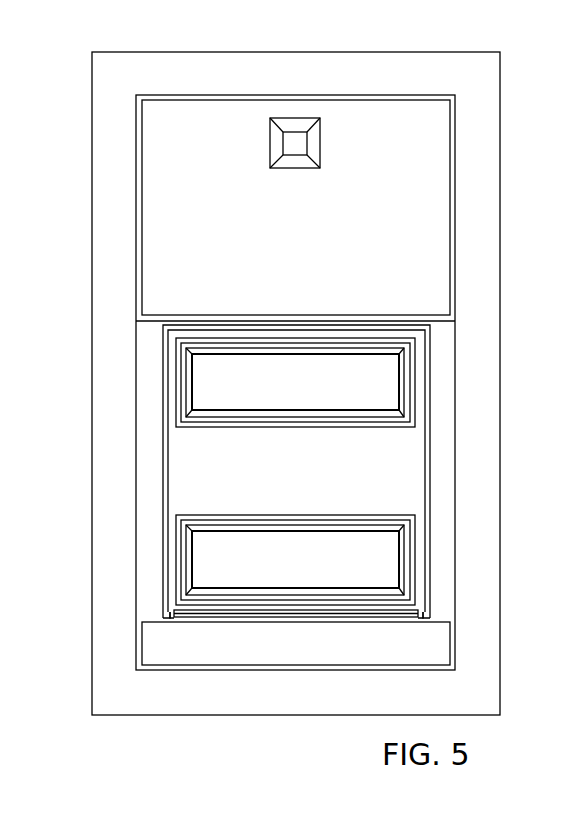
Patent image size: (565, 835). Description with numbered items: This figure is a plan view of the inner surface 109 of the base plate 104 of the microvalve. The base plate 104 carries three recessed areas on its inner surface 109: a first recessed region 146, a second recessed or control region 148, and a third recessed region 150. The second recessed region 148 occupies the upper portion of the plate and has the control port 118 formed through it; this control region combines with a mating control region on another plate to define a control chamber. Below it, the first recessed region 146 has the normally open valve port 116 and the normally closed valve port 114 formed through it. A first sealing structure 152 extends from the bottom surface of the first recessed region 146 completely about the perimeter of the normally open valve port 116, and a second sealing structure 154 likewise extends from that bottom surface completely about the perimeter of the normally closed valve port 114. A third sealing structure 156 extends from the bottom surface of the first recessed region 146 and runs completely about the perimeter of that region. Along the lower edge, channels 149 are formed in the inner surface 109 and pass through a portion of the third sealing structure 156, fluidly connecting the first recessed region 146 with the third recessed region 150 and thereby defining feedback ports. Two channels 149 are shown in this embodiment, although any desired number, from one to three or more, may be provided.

The base plate 104 is at (124, 52).
The inner surface 109 is at (461, 69).
The normally closed valve port 114 is at (377, 558).
The normally open valve port 116 is at (377, 380).
The control port 118 is at (313, 143).
The first recessed region 146 is at (145, 453).
The second recessed region 148 is at (163, 182).
The channels 149 is at (173, 618).
The third recessed region 150 is at (163, 642).
The first sealing structure 152 is at (405, 352).
The second sealing structure 154 is at (408, 523).
The third sealing structure 156 is at (165, 372).